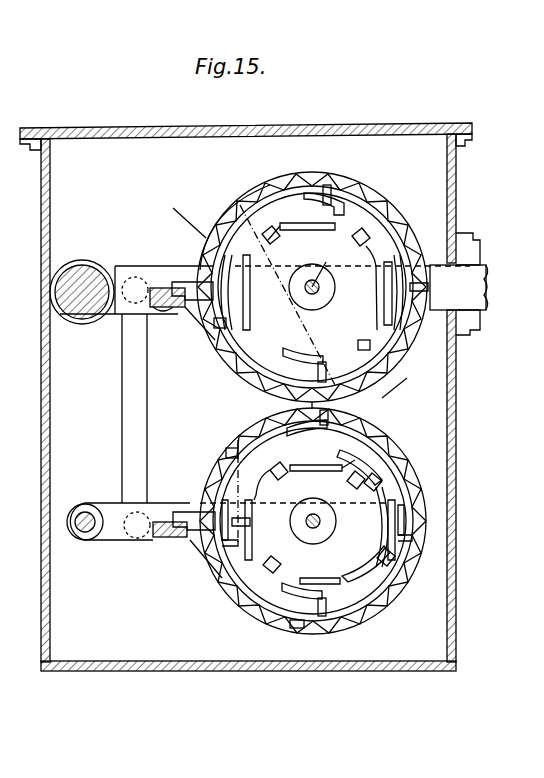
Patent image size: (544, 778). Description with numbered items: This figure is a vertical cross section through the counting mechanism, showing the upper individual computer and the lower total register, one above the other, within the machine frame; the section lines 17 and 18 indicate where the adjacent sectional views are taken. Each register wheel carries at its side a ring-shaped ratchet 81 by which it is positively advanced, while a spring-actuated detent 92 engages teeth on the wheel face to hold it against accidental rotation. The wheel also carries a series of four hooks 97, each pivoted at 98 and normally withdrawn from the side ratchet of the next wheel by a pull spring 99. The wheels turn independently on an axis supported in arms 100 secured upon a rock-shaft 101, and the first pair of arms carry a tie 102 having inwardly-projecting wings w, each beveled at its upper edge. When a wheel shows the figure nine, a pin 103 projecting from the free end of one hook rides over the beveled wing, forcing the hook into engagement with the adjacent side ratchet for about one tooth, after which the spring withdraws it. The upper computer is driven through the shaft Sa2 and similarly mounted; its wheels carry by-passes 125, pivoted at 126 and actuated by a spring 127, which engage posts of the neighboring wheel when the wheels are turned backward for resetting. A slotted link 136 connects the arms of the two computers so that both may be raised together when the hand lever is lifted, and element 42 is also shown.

The section line 17 is at (266, 528).
The section line 18 is at (277, 304).
The shaft 42 is at (320, 521).
The ratchet 81 is at (256, 197).
The spring-actuated detent 92 is at (207, 352).
The hook 97 is at (430, 288).
The pivot 98 is at (408, 475).
The pull spring 99 is at (346, 455).
The arms 100 is at (110, 322).
The rock-shaft 101 is at (92, 268).
The tie 102 is at (152, 270).
The pin 103 is at (462, 252).
The by-pass 125 is at (268, 245).
The pivot 126 is at (386, 474).
The spring 127 is at (338, 226).
The slotted link 136 is at (122, 422).
The wing W is at (180, 270).
The shaft Sa2 is at (320, 273).